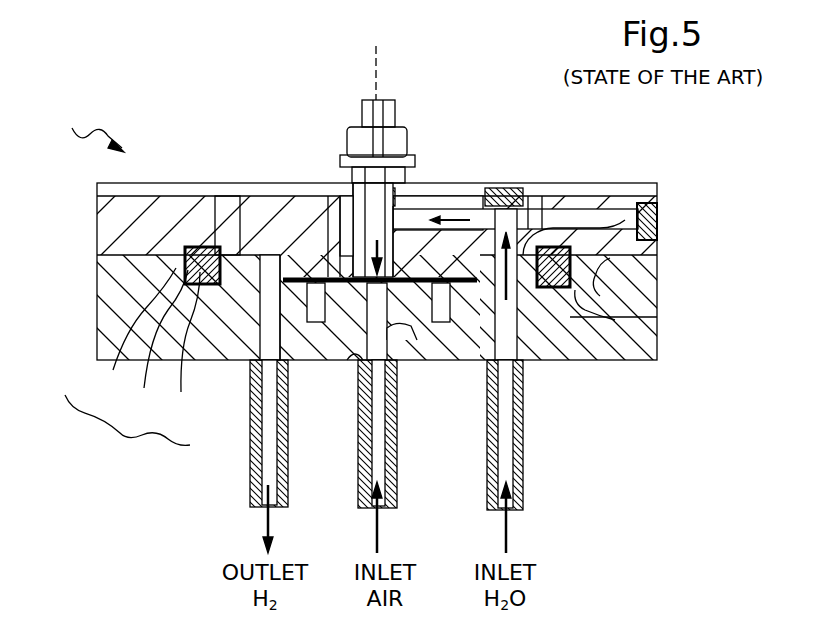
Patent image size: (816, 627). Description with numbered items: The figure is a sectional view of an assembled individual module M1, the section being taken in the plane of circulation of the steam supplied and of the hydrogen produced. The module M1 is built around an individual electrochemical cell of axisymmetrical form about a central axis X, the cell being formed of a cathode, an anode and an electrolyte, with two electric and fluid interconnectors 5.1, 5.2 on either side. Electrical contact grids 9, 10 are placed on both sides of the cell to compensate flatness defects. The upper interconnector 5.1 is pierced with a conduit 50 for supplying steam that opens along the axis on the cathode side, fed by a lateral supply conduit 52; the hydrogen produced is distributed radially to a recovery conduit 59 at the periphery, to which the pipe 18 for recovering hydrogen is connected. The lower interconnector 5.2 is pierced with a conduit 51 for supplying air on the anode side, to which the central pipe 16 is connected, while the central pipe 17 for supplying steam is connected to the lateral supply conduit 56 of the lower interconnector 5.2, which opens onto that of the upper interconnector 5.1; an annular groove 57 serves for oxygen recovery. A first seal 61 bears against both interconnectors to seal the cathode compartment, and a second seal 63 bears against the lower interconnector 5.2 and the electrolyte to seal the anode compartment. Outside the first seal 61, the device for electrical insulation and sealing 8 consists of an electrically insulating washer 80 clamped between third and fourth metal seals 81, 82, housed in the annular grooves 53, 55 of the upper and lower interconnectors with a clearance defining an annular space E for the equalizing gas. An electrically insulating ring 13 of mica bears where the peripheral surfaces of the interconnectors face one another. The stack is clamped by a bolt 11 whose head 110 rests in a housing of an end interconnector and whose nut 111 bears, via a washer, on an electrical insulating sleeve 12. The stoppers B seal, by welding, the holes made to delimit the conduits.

The individual module M1 is at (85, 125).
The upper interconnector 5.1 is at (97, 214).
The lower interconnector 5.2 is at (97, 304).
The first seal 61 is at (239, 190).
The annular space E is at (212, 183).
The electrical contact grid 9 is at (346, 236).
The electrical contact grid 10 is at (328, 182).
The stopper B is at (657, 215).
The head of the through bolt 110 is at (394, 118).
The bolt 11 is at (431, 110).
The nut 111 is at (402, 148).
The electrical insulating sleeve 12 is at (397, 174).
The central axis X is at (376, 61).
The conduit for supplying steam 50 is at (416, 204).
The lateral supply conduit 52 is at (521, 190).
The annular groove 53 is at (610, 198).
The electrically insulating ring 13 is at (657, 270).
The annular groove 55 is at (621, 309).
The lateral supply conduit 56 is at (551, 325).
The central pipe for supplying steam 17 is at (523, 458).
The central pipe for supplying air 16 is at (397, 478).
The pipe for recovering the hydrogen produced 18 is at (280, 465).
The conduit for recovering the hydrogen produced 59 is at (244, 344).
The annular groove 57 is at (316, 340).
The conduit for supplying draining gas 51 is at (415, 347).
The second seal 63 is at (444, 332).
The third metal seal 81 is at (129, 329).
The electrically insulating washer 80 is at (151, 342).
The fourth metal seal 82 is at (183, 348).
The device for electrical insulation and sealing 8 is at (127, 428).